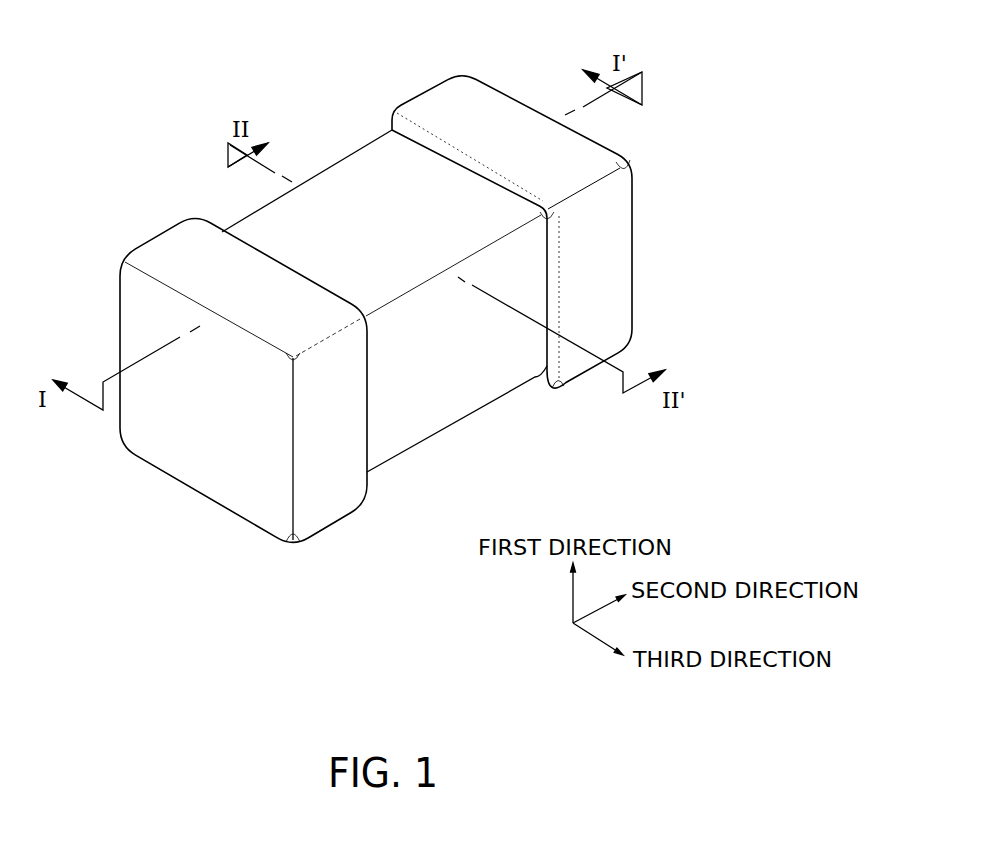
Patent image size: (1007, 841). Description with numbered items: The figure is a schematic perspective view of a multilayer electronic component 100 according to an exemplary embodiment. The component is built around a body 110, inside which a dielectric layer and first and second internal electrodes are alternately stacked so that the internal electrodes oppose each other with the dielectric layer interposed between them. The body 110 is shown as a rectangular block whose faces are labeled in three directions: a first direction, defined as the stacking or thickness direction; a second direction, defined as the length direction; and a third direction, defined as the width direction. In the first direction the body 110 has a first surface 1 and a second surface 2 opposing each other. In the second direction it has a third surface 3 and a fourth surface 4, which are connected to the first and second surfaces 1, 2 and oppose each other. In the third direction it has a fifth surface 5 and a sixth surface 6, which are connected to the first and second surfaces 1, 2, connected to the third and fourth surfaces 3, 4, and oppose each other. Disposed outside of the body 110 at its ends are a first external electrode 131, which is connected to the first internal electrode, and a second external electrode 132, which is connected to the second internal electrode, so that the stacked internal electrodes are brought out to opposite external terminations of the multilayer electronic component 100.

The multilayer electronic component 100 is at (158, 41).
The body 110 is at (256, 240).
The first external electrode 131 is at (178, 252).
The second external electrode 132 is at (433, 108).
The first surface 1 is at (418, 396).
The second surface 2 is at (390, 188).
The third surface 3 is at (212, 442).
The fourth surface 4 is at (586, 246).
The fifth surface 5 is at (477, 367).
The sixth surface 6 is at (336, 207).